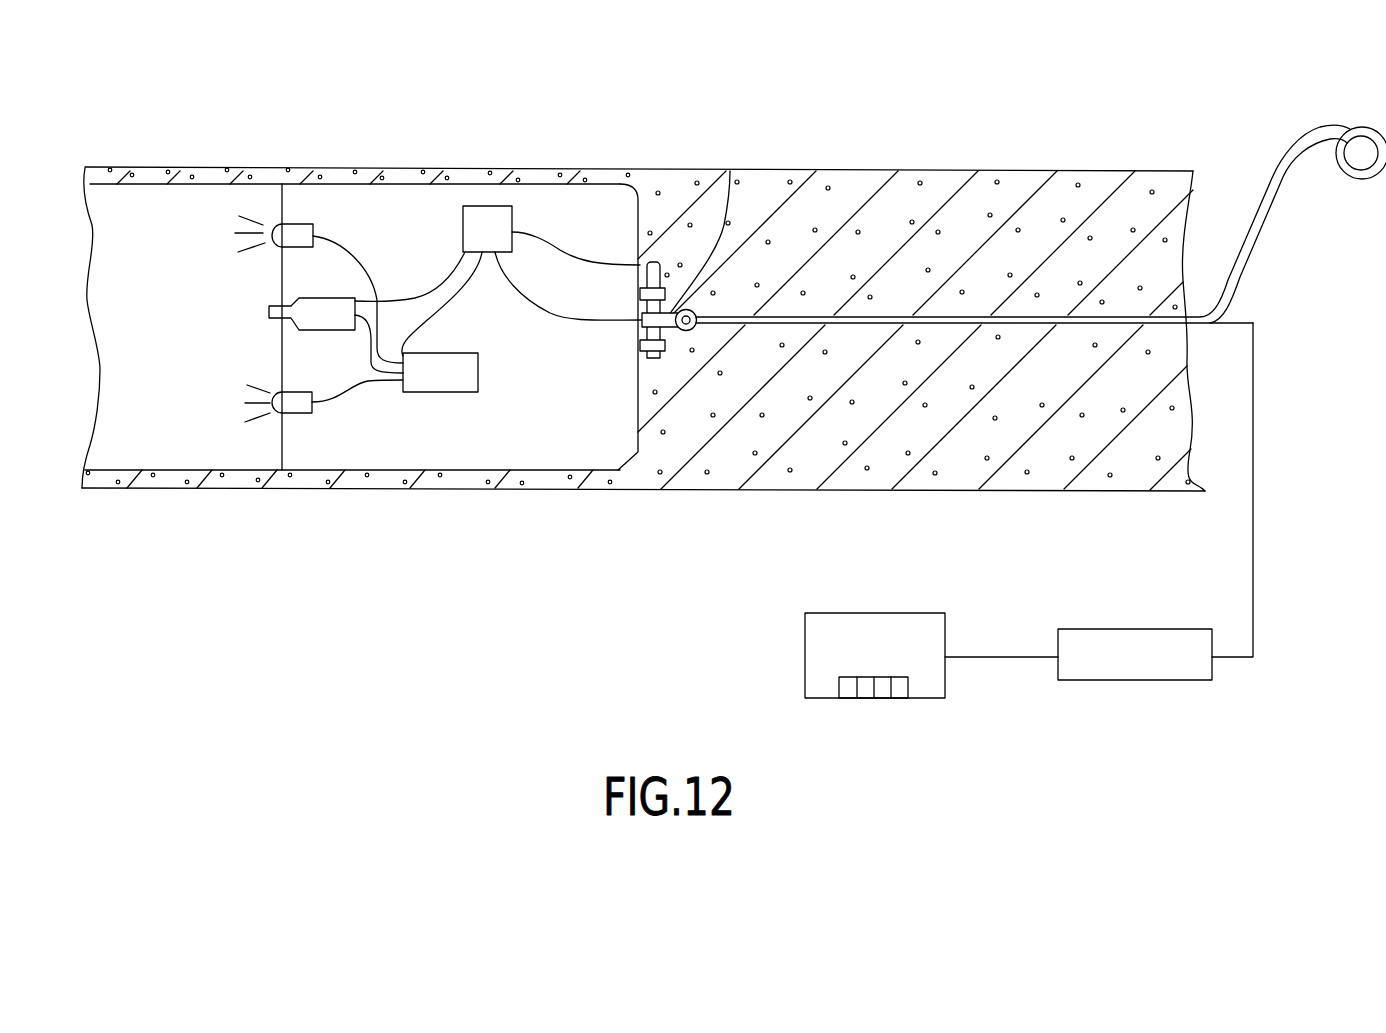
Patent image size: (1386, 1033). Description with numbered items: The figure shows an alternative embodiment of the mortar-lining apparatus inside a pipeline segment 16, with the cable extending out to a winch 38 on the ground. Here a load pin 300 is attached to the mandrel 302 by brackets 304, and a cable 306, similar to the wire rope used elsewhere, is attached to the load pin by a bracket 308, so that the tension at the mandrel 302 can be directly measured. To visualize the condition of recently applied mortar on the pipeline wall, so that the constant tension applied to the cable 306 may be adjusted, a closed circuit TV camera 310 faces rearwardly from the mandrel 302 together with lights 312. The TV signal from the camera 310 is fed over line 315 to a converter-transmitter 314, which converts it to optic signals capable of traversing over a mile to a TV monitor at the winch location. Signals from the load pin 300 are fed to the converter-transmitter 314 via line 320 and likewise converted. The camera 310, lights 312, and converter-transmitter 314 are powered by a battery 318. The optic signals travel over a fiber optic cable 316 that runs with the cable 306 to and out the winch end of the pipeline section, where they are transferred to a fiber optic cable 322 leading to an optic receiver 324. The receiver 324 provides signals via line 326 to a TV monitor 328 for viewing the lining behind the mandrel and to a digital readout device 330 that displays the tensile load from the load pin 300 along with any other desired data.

The pipeline segment 16 is at (705, 168).
The winch 38 is at (1360, 150).
The load pin 300 is at (640, 365).
The mandrel 302 is at (396, 208).
The brackets 304 is at (641, 293).
The cable 306 is at (871, 318).
The bracket 308 is at (788, 188).
The closed circuit TV camera 310 is at (268, 322).
The lights 312 is at (275, 247).
The converter-transmitter 314 is at (485, 218).
The line 315 is at (412, 298).
The fiber optic cable 316 is at (531, 302).
The battery 318 is at (438, 383).
The line 320 is at (553, 250).
The fiber optic cable 322 is at (1256, 492).
The optic receiver 324 is at (1138, 628).
The line 326 is at (1006, 660).
The TV monitor 328 is at (852, 612).
The digital readout device 330 is at (866, 699).